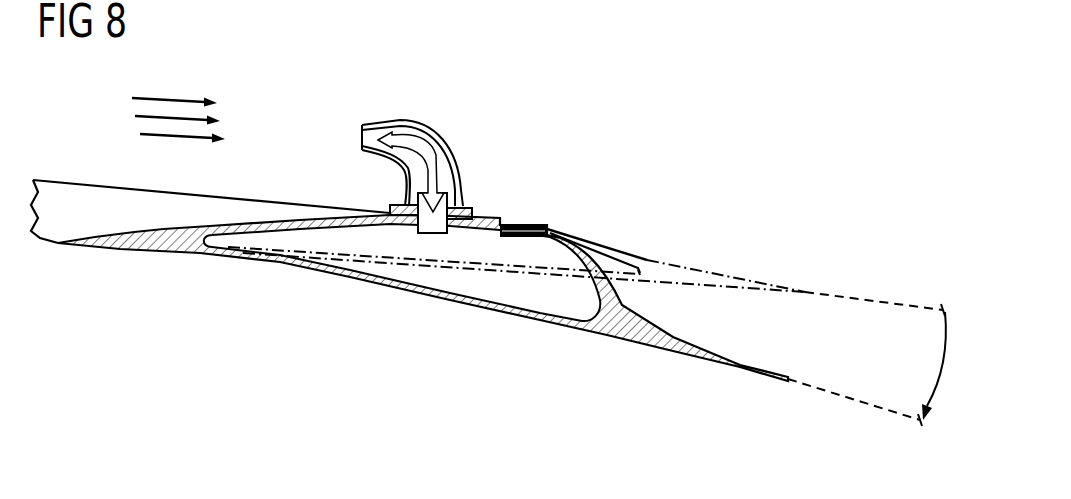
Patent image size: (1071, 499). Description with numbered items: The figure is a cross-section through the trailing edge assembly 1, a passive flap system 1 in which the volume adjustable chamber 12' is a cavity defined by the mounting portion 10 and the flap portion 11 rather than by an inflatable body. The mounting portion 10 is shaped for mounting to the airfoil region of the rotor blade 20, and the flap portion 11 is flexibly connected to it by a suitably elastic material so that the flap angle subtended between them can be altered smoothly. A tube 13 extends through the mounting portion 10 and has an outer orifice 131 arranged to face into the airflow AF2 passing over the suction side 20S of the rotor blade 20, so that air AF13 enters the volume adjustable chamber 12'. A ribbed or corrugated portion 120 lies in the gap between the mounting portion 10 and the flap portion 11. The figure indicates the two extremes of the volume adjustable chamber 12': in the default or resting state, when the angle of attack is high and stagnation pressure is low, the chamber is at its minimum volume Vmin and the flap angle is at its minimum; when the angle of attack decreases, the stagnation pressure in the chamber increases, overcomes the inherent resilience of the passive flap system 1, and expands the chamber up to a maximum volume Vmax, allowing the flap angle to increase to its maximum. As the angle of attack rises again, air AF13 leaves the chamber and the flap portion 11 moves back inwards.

The trailing edge assembly 1 is at (596, 152).
The mounting portion 10 is at (172, 240).
The flap portion 11 is at (717, 278).
The volume adjustable chamber 12' is at (402, 293).
The tube 13 is at (438, 153).
The rotor blade 20 is at (46, 233).
The suction side 20S is at (125, 180).
The ribbed or corrugated portion 120 is at (619, 251).
The outer orifice 131 is at (362, 132).
The airflow AF2 is at (182, 140).
The air entering the tube AF13 is at (413, 157).
The minimum volume Vmin is at (477, 237).
The maximum volume Vmax is at (510, 288).